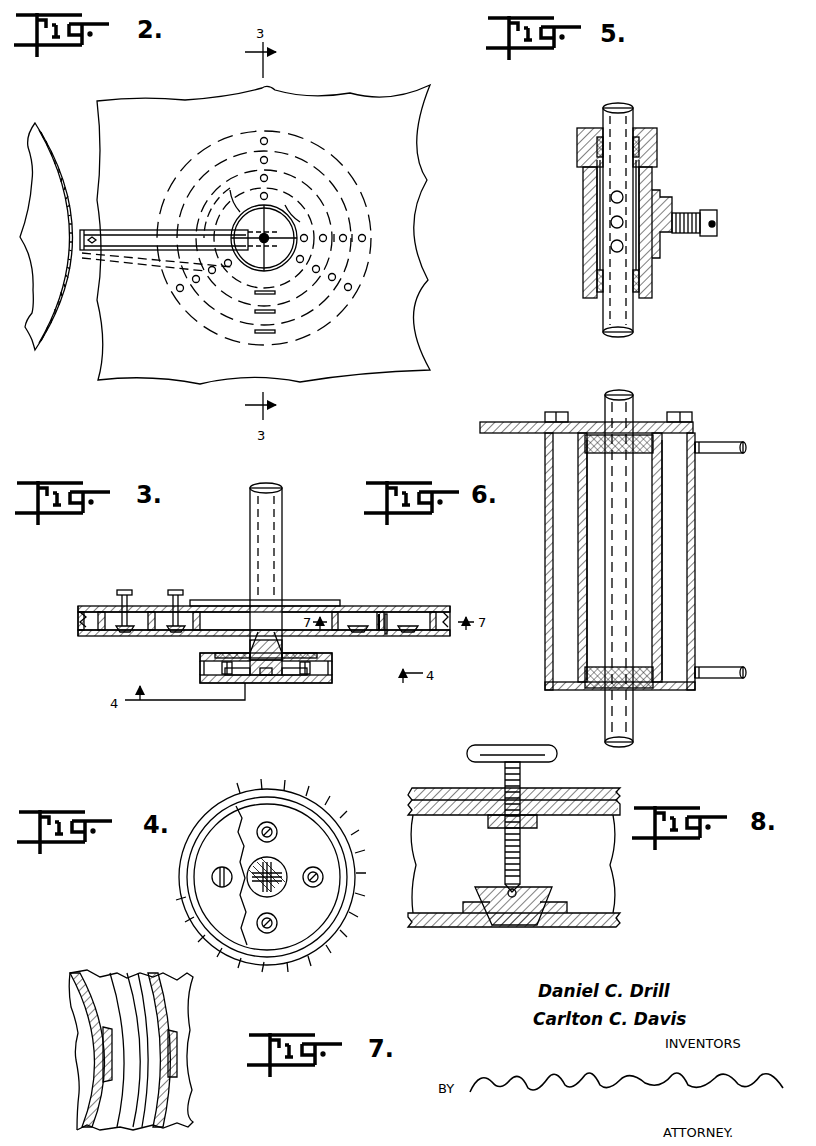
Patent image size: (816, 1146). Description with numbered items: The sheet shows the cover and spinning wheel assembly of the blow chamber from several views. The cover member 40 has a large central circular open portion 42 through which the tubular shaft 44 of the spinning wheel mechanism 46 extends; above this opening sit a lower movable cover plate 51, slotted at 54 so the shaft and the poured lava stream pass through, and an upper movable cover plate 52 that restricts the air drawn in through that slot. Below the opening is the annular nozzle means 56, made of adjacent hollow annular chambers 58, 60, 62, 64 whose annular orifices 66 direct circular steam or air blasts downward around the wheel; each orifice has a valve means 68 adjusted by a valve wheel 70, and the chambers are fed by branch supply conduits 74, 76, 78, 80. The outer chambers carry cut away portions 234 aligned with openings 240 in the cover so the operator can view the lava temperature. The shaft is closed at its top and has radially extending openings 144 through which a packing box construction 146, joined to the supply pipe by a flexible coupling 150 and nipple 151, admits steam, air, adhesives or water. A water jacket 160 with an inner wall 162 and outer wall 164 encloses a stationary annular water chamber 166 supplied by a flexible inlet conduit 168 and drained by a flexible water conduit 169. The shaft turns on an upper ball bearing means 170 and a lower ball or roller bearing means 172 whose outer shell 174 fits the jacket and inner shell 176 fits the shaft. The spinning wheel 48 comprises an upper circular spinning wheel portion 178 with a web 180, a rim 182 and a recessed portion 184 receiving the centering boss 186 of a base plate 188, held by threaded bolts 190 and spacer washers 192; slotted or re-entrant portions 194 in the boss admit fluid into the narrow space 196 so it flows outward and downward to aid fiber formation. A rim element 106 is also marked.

In FIG. 3, the cover member 40 is at (442, 604).
In FIG. 8, the cover member 40 is at (455, 786).
In FIG. 3, the circular open portion 42 is at (206, 600).
In FIG. 2, the tubular shaft 44 is at (268, 238).
In FIG. 3, the tubular shaft 44 is at (283, 533).
In FIG. 3, the spinning wheel mechanism 46 is at (247, 533).
In FIG. 3, the spinning wheel 48 is at (199, 680).
In FIG. 2, the lower movable cover plate 51 is at (252, 212).
In FIG. 3, the lower movable cover plate 51 is at (332, 607).
In FIG. 2, the upper movable cover plate 52 is at (278, 205).
In FIG. 3, the upper movable cover plate 52 is at (306, 605).
In FIG. 3, the slot 54 is at (282, 603).
In FIG. 2, the annular nozzle means 56 is at (336, 166).
In FIG. 3, the annular nozzle means 56 is at (426, 640).
In FIG. 8, the annular nozzle means 56 is at (440, 932).
In FIG. 2, the hollow annular chamber 58 is at (200, 168).
In FIG. 3, the hollow annular chamber 58 is at (156, 636).
In FIG. 7, the hollow annular chamber 58 is at (163, 992).
In FIG. 2, the hollow annular chamber 60 is at (182, 180).
In FIG. 3, the hollow annular chamber 60 is at (110, 636).
In FIG. 7, the hollow annular chamber 60 is at (93, 978).
In FIG. 2, the hollow annular chamber 62 is at (172, 196).
In FIG. 3, the hollow annular chamber 62 is at (84, 636).
In FIG. 7, the hollow annular chamber 62 is at (78, 994).
In FIG. 2, the hollow annular chamber 64 is at (164, 212).
In FIG. 7, the annular orifice 66 is at (116, 978).
In FIG. 8, the annular orifice 66 is at (532, 928).
In FIG. 3, the valve means 68 is at (124, 633).
In FIG. 7, the valve means 68 is at (130, 978).
In FIG. 8, the valve means 68 is at (535, 890).
In FIG. 2, the valve wheel 70 is at (262, 193).
In FIG. 3, the valve wheel 70 is at (175, 590).
In FIG. 8, the valve wheel 70 is at (487, 745).
In FIG. 2, the branch supply conduit 74 is at (308, 242).
In FIG. 2, the branch supply conduit 76 is at (327, 238).
In FIG. 2, the branch supply conduit 78 is at (347, 238).
In FIG. 2, the branch supply conduit 80 is at (366, 238).
In FIG. 3, the outer rim 106 is at (94, 607).
In FIG. 5, the radially extending openings 144 is at (630, 114).
In FIG. 5, the packing box construction 146 is at (578, 240).
In FIG. 5, the flexible coupling 150 is at (717, 219).
In FIG. 5, the nipple 151 is at (692, 213).
In FIG. 6, the water jacket 160 is at (544, 465).
In FIG. 6, the inner wall 162 is at (665, 562).
In FIG. 6, the outer wall 164 is at (695, 518).
In FIG. 6, the annular water chamber 166 is at (675, 592).
In FIG. 6, the flexible inlet conduit 168 is at (714, 668).
In FIG. 6, the flexible water conduit 169 is at (714, 443).
In FIG. 6, the ball bearing means 170 is at (604, 436).
In FIG. 6, the ball or roller bearing means 172 is at (642, 690).
In FIG. 6, the outer shell 174 is at (590, 690).
In FIG. 6, the inner shell 176 is at (632, 690).
In FIG. 3, the upper circular spinning wheel portion 178 is at (335, 680).
In FIG. 4, the upper circular spinning wheel portion 178 is at (333, 812).
In FIG. 3, the web 180 is at (220, 653).
In FIG. 4, the web 180 is at (302, 925).
In FIG. 3, the rim 182 is at (333, 672).
In FIG. 4, the rim 182 is at (292, 792).
In FIG. 3, the recessed portion 184 is at (252, 684).
In FIG. 4, the recessed portion 184 is at (272, 864).
In FIG. 4, the centering boss 186 is at (280, 872).
In FIG. 3, the base plate 188 is at (280, 684).
In FIG. 4, the base plate 188 is at (223, 820).
In FIG. 3, the threaded bolts 190 is at (228, 684).
In FIG. 4, the threaded bolts 190 is at (210, 874).
In FIG. 3, the spacer washers 192 is at (306, 684).
In FIG. 4, the spacer washers 192 is at (323, 872).
In FIG. 4, the slotted or re-entrant portions 194 is at (278, 886).
In FIG. 3, the narrow space 196 is at (270, 684).
In FIG. 3, the cut away portions 234 is at (382, 640).
In FIG. 7, the cut away portions 234 is at (178, 1048).
In FIG. 2, the aligned openings 240 is at (276, 293).
In FIG. 3, the aligned openings 240 is at (386, 634).